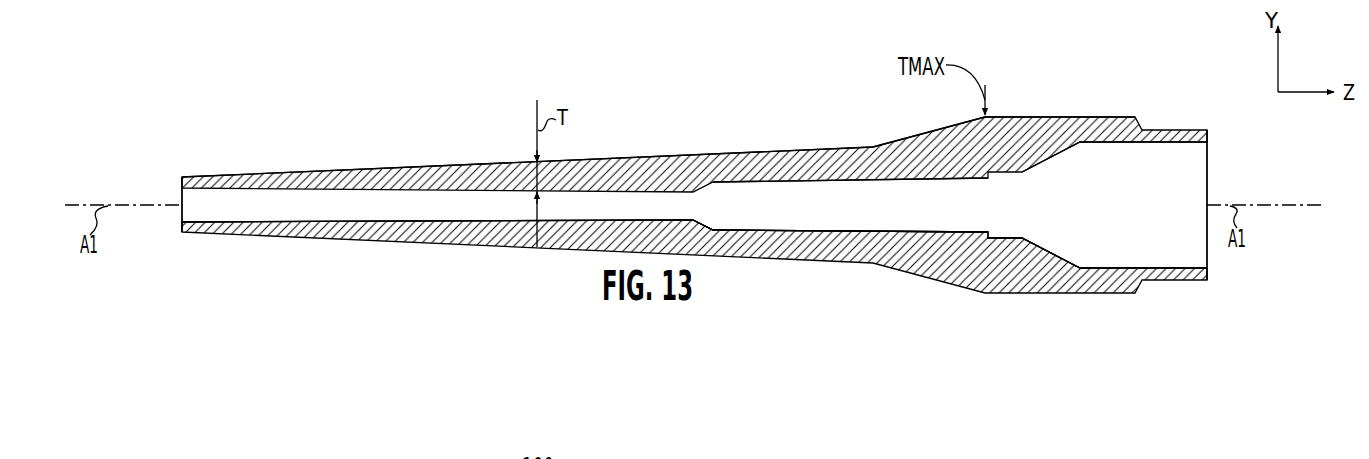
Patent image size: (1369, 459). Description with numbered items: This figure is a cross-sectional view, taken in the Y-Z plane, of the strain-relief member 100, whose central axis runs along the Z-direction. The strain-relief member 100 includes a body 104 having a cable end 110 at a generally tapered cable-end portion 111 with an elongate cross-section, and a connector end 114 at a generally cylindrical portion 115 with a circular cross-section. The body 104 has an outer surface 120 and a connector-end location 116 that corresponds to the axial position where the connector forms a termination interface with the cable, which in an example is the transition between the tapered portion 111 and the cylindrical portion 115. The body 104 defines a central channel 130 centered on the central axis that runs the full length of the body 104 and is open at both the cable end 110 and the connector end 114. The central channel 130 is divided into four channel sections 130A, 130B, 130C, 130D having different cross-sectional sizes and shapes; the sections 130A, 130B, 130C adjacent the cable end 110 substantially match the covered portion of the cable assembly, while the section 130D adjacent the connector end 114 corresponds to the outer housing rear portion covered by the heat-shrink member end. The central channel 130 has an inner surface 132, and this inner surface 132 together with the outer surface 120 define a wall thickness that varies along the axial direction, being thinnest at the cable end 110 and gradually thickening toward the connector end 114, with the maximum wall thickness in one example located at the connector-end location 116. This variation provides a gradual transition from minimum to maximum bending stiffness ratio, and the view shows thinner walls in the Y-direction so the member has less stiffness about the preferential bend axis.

The strain-relief member 100 is at (455, 113).
The cable end 110 is at (182, 177).
The tapered cable-end portion 111 is at (363, 140).
The body 104 is at (815, 168).
The outer surface 120 is at (872, 147).
The connector-end location 116 is at (997, 96).
The cylindrical portion 115 is at (1085, 103).
The connector end 114 is at (1210, 128).
The central channel 130 is at (895, 203).
The first channel section 130A is at (303, 207).
The second channel section 130B is at (854, 214).
The third channel section 130C is at (1001, 220).
The fourth channel section 130D is at (1081, 230).
The inner surface 132 is at (758, 231).